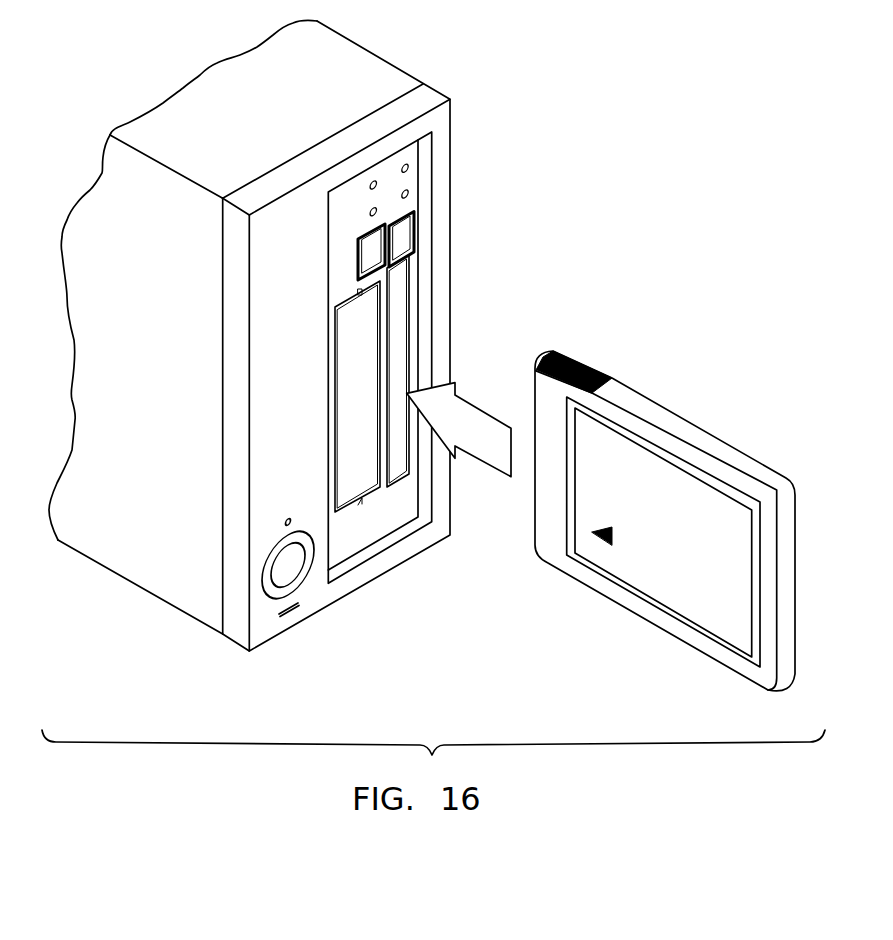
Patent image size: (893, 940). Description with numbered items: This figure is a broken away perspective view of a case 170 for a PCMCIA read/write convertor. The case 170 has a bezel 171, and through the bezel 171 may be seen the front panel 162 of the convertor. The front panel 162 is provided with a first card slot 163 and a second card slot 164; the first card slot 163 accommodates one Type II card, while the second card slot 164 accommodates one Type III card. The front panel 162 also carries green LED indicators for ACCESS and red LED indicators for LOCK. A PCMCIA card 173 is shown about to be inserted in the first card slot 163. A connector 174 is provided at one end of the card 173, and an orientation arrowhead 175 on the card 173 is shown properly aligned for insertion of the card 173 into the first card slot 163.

The case 170 is at (340, 51).
The bezel 171 is at (443, 115).
The front panel 162 is at (410, 155).
The first card slot 163 is at (404, 330).
The second card slot 164 is at (337, 376).
The PCMCIA card 173 is at (734, 522).
The connector 174 is at (571, 356).
The orientation arrowhead 175 is at (601, 548).